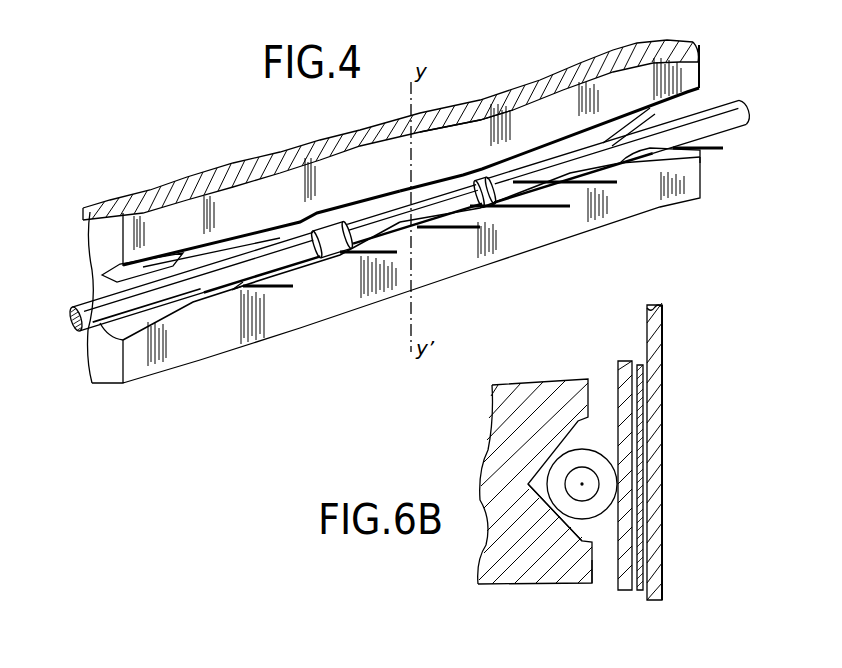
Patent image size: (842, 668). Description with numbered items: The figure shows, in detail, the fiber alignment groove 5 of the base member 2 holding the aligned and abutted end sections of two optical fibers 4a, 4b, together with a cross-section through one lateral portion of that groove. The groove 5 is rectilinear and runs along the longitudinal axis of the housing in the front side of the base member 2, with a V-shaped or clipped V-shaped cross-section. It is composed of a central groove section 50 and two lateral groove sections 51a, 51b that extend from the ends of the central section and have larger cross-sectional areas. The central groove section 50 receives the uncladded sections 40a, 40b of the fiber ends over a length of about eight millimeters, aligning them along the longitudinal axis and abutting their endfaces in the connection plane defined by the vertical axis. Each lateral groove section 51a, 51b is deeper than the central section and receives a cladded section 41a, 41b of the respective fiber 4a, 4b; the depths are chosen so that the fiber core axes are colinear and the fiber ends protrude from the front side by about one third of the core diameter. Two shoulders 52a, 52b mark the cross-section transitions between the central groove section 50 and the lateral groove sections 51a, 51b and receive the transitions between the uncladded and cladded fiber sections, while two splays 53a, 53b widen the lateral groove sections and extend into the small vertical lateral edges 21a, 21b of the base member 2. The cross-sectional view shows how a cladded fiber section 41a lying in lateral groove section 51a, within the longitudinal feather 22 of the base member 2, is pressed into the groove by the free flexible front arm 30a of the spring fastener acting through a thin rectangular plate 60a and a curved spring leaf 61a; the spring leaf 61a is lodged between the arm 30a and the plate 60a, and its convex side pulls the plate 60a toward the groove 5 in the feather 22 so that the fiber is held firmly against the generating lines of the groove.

In FIG. 6B, the base member 2 is at (532, 386).
In FIG. 4, the optical fiber 4a is at (70, 331).
In FIG. 4, the optical fiber 4b is at (745, 104).
In FIG. 4, the fiber alignment groove 5 is at (262, 185).
In FIG. 4, the vertical lateral edge 21a is at (98, 230).
In FIG. 4, the vertical lateral edge 21b is at (699, 62).
In FIG. 4, the longitudinal feather 22 is at (482, 125).
In FIG. 6B, the longitudinal feather 22 is at (595, 584).
In FIG. 6B, the front vertical flexible arm 30a is at (660, 562).
In FIG. 4, the uncladded fiber section 40a is at (358, 216).
In FIG. 6B, the uncladded fiber section 40a is at (584, 483).
In FIG. 4, the uncladded fiber section 40b is at (440, 194).
In FIG. 4, the cladded fiber section 41a is at (198, 298).
In FIG. 6B, the cladded fiber section 41a is at (600, 448).
In FIG. 4, the cladded fiber section 41b is at (607, 143).
In FIG. 4, the central groove section 50 is at (373, 208).
In FIG. 4, the lateral groove section 51a is at (230, 246).
In FIG. 6B, the lateral groove section 51a is at (594, 532).
In FIG. 4, the lateral groove section 51b is at (546, 154).
In FIG. 4, the shoulder 52a is at (342, 258).
In FIG. 4, the shoulder 52b is at (487, 215).
In FIG. 4, the splay 53a is at (100, 277).
In FIG. 4, the splay 53b is at (693, 152).
In FIG. 6B, the thin rectangular plate 60a is at (625, 592).
In FIG. 6B, the curved spring leaf 61a is at (640, 496).